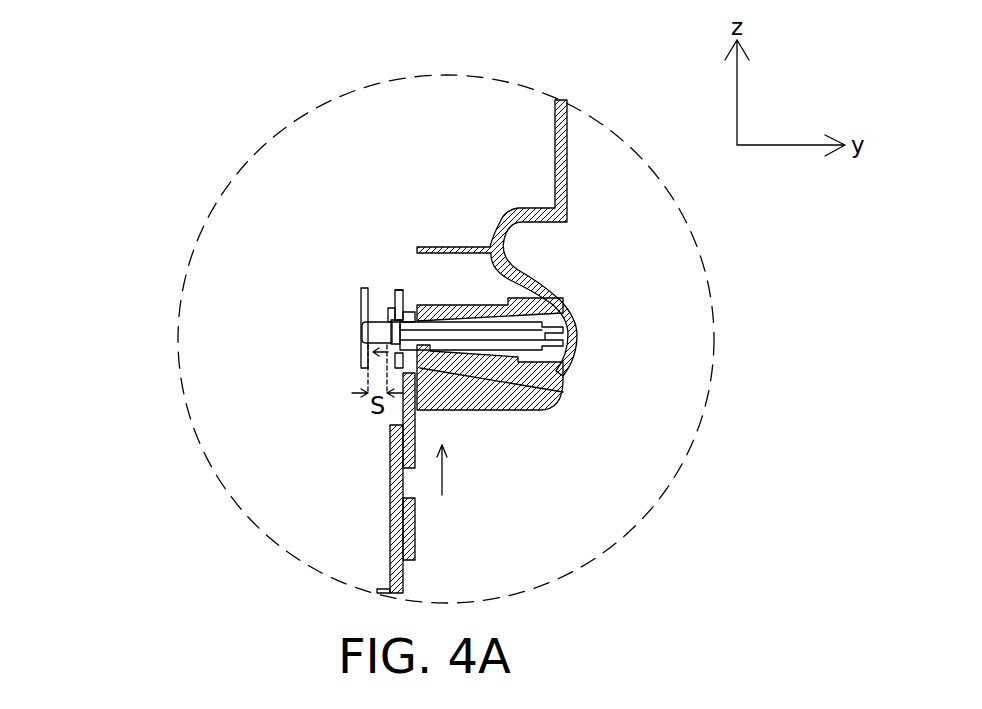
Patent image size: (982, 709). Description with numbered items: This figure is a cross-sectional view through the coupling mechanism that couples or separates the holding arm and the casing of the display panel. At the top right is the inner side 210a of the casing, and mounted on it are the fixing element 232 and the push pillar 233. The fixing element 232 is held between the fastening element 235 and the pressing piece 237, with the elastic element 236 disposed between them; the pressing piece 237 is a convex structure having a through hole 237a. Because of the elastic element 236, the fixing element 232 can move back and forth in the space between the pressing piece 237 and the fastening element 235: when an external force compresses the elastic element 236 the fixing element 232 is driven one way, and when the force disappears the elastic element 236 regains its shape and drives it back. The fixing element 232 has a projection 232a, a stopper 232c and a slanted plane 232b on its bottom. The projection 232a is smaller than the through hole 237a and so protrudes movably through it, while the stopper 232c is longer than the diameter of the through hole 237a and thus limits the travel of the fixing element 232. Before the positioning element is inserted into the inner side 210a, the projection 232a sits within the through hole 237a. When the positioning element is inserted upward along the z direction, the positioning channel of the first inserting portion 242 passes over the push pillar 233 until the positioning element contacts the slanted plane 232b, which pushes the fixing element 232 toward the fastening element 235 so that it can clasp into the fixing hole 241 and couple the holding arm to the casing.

The inner side of the casing 210a is at (567, 140).
The fixing element 232 is at (447, 269).
The projection 232a is at (577, 320).
The slanted plane 232b is at (563, 386).
The stopper 232c is at (365, 367).
The push pillar 233 is at (577, 333).
The fastening element 235 is at (362, 332).
The elastic element 236 is at (389, 310).
The pressing piece 237 is at (392, 304).
The through hole 237a is at (403, 290).
The fixing hole 241 is at (422, 505).
The first inserting portion 242 is at (415, 442).